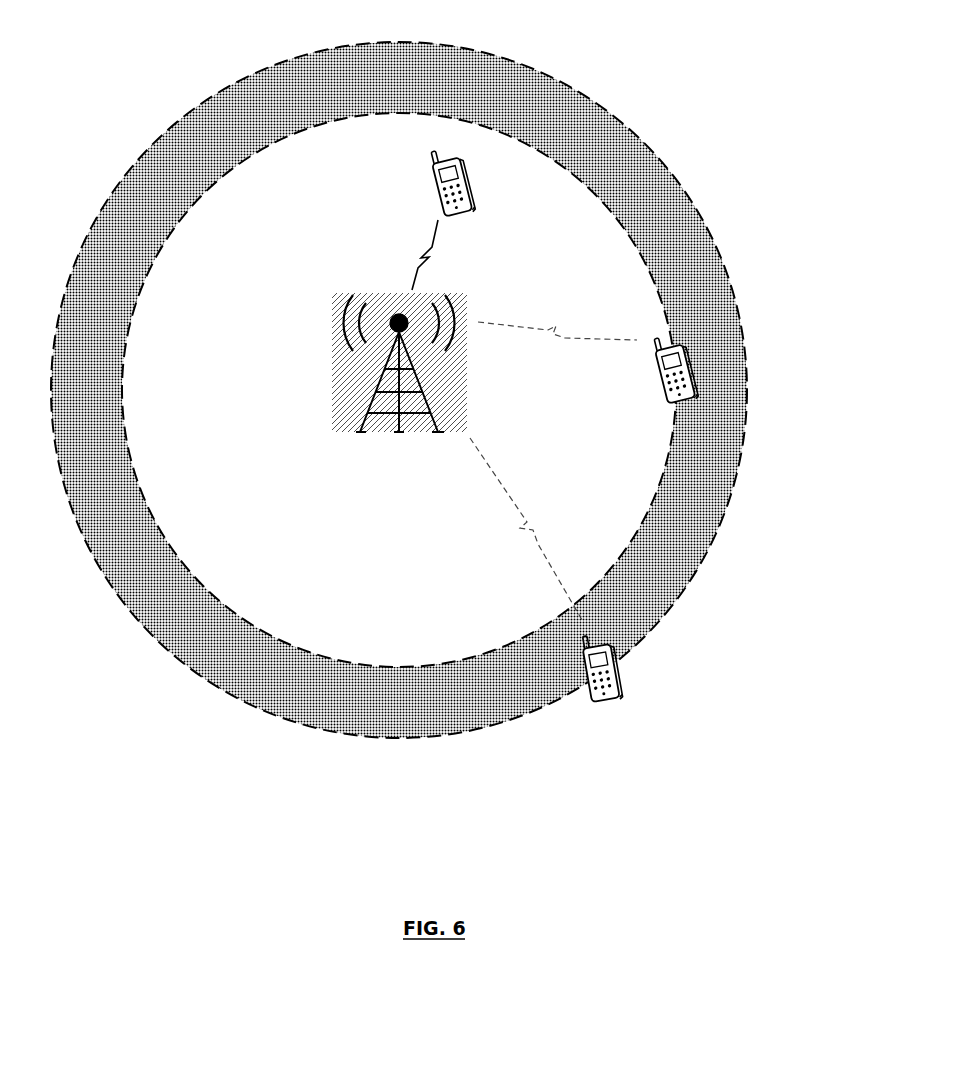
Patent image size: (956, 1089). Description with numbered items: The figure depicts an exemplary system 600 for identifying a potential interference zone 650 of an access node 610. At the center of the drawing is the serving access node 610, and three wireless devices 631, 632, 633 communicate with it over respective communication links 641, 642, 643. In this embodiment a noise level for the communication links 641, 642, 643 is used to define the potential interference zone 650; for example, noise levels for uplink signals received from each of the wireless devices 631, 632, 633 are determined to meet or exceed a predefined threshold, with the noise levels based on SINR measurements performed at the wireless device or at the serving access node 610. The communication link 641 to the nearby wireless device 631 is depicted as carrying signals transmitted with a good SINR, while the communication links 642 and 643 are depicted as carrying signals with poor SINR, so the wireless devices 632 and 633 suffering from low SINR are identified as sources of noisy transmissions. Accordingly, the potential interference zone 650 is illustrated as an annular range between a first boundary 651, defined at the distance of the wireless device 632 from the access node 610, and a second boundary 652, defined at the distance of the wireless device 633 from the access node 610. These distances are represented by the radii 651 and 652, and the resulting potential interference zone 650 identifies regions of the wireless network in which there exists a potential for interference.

The system 600 is at (678, 72).
The access node 610 is at (390, 396).
The wireless device 631 is at (433, 168).
The wireless device 632 is at (663, 404).
The wireless device 633 is at (613, 702).
The communication link 641 is at (419, 263).
The communication link 642 is at (611, 341).
The communication link 643 is at (551, 587).
The potential interference zone 650 is at (420, 86).
The first boundary 651 is at (410, 668).
The second boundary 652 is at (411, 738).